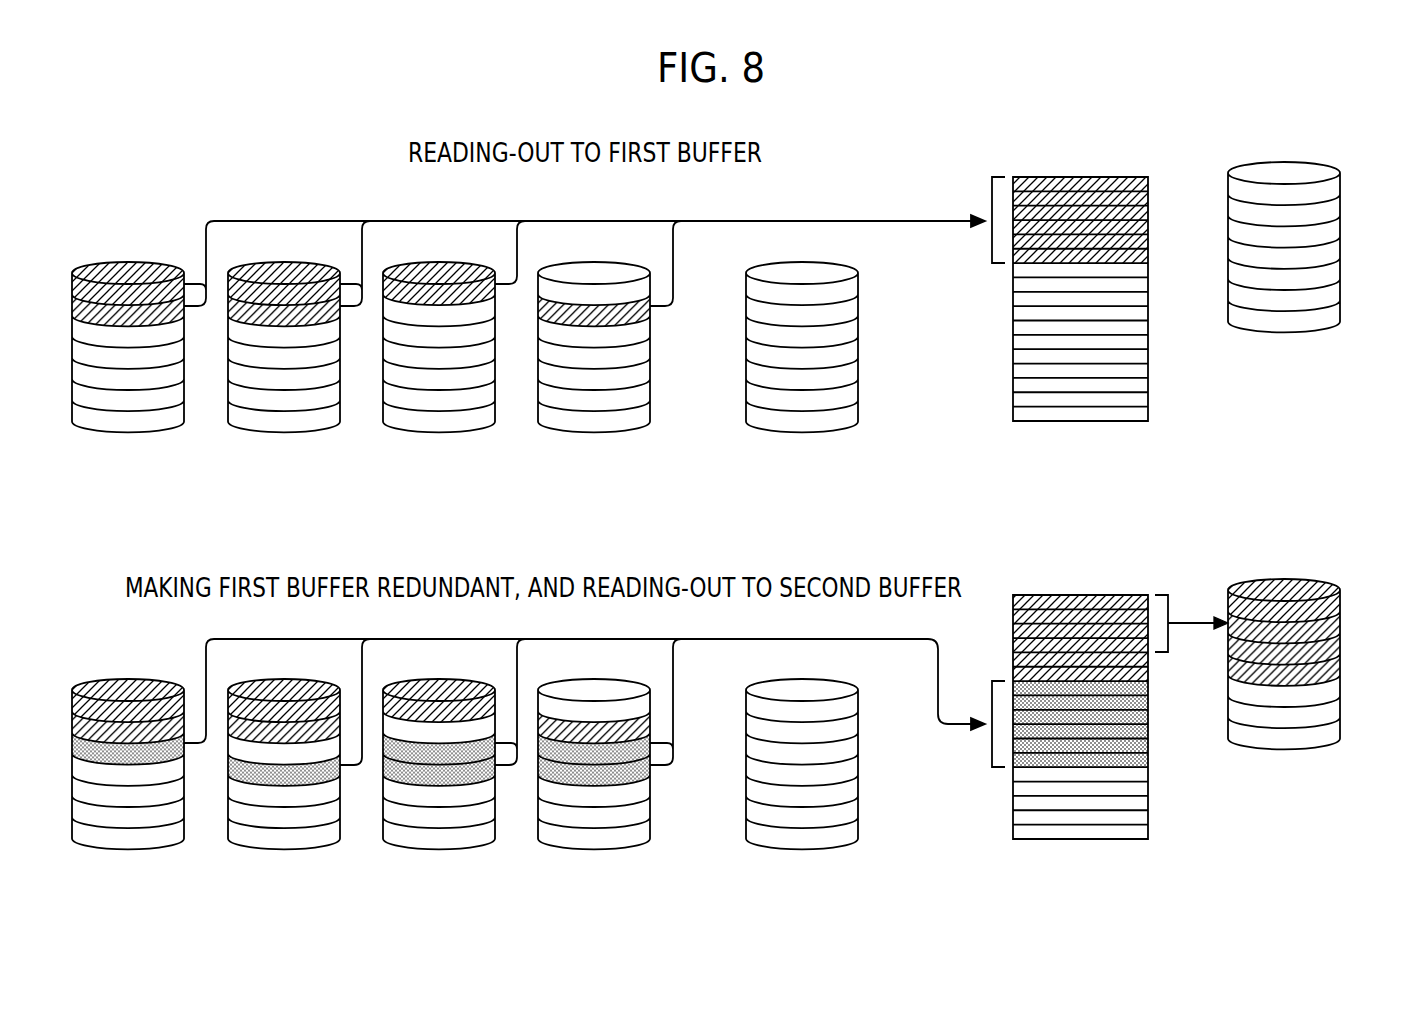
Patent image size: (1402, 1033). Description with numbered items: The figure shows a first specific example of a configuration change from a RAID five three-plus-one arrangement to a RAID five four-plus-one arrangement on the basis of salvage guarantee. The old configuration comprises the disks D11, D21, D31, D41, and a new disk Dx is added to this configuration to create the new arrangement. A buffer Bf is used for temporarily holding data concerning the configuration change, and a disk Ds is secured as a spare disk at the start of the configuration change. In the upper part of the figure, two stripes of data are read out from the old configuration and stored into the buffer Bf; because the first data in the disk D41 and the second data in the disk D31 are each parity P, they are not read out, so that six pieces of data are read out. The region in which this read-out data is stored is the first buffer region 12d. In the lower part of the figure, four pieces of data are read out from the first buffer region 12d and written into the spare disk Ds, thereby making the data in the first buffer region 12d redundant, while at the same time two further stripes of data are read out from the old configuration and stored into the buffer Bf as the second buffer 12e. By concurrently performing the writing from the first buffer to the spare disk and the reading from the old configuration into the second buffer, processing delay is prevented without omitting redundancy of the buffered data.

The first buffer region 12d is at (1148, 215).
The second buffer 12e is at (1148, 735).
The buffer Bf is at (1093, 473).
The spare disk Ds is at (1341, 213).
The disk D11 is at (128, 572).
The disk D21 is at (284, 572).
The disk D31 is at (439, 572).
The disk D41 is at (594, 572).
The disk Dx is at (802, 572).